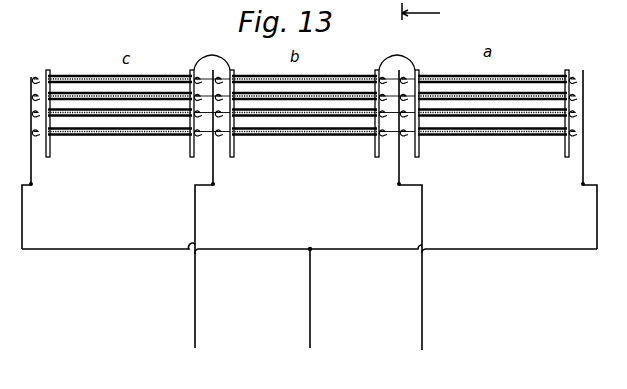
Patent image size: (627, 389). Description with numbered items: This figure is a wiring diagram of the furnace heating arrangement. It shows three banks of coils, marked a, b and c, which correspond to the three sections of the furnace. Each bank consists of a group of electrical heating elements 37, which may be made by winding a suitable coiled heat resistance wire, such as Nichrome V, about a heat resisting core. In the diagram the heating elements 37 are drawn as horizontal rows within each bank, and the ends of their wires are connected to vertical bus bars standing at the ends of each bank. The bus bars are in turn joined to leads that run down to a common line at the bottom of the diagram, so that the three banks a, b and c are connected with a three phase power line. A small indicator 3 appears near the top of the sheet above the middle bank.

The section line indicator 3 is at (411, 13).
The resistance coil bands 37 is at (68, 77).